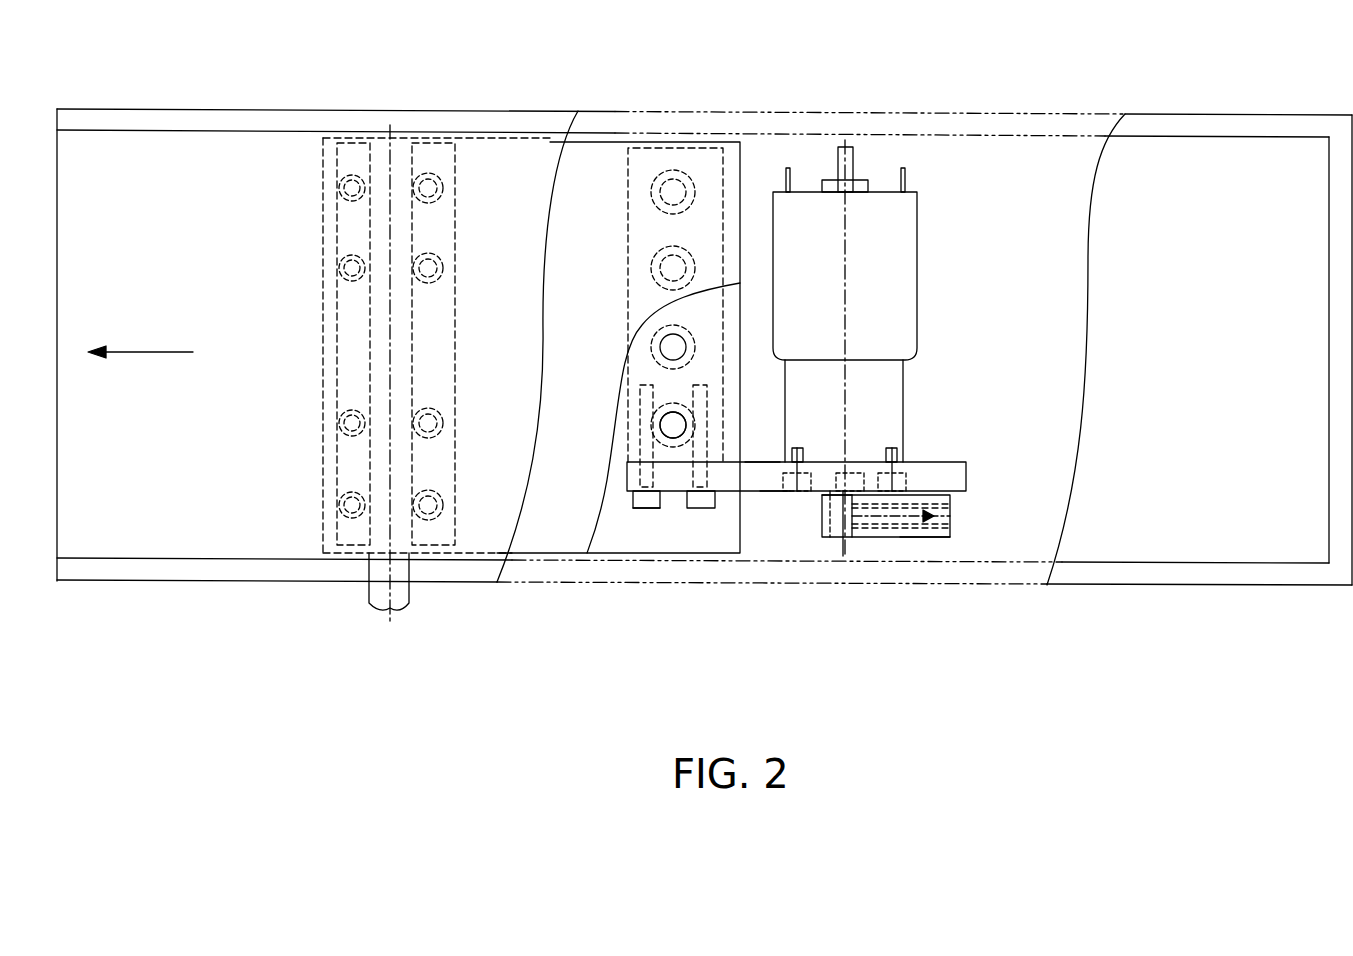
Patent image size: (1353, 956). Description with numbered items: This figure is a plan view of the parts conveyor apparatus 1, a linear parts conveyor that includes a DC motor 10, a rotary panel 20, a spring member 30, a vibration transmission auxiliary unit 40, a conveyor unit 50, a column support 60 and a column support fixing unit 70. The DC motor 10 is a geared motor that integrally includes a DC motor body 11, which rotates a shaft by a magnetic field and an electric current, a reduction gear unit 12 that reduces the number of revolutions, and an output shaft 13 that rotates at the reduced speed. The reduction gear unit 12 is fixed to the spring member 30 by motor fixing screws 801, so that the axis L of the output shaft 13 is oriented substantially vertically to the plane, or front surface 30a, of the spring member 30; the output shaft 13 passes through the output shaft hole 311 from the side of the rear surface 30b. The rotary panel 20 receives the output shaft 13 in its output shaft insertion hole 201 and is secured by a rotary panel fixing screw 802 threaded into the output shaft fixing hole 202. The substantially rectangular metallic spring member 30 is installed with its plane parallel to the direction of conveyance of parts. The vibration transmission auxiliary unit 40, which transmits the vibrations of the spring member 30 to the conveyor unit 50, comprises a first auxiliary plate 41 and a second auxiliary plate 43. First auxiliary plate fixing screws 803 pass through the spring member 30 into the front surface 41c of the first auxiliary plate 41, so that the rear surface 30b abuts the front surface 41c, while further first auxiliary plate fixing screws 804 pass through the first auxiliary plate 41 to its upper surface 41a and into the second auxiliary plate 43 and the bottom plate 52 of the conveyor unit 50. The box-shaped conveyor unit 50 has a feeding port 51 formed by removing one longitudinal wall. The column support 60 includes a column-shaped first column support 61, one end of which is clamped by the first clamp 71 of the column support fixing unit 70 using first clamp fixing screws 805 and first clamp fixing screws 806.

The parts conveyor apparatus 1 is at (1028, 58).
The DC motor 10 is at (987, 318).
The DC motor body 11 is at (910, 326).
The reduction gear unit 12 is at (893, 392).
The output shaft 13 is at (848, 490).
The rotary panel 20 is at (935, 532).
The spring member 30 is at (748, 500).
The front surface 30a is at (772, 492).
The rear surface 30b is at (762, 462).
The vibration transmission auxiliary unit 40 is at (660, 66).
The first auxiliary plate 41 is at (641, 337).
The upper surface 41a is at (637, 378).
The front surface 41c is at (638, 468).
The second auxiliary plate 43 is at (612, 152).
The conveyor unit 50 is at (1205, 115).
The feeding port 51 is at (57, 165).
The bottom plate 52 is at (163, 150).
The column support 60 is at (432, 660).
The first column support 61 is at (398, 609).
The column support fixing unit 70 is at (514, 66).
The first clamp 71 is at (478, 160).
The output shaft insertion hole 201 is at (832, 482).
The output shaft fixing hole 202 is at (925, 537).
The output shaft hole 311 is at (826, 488).
The motor fixing screws 801 is at (885, 478).
The rotary panel fixing screw 802 is at (935, 516).
The first auxiliary plate fixing screws 803 is at (645, 508).
The first auxiliary plate fixing screws 804 is at (672, 450).
The first clamp fixing screws 805 is at (444, 268).
The first clamp fixing screws 806 is at (338, 277).
The axis L is at (845, 545).